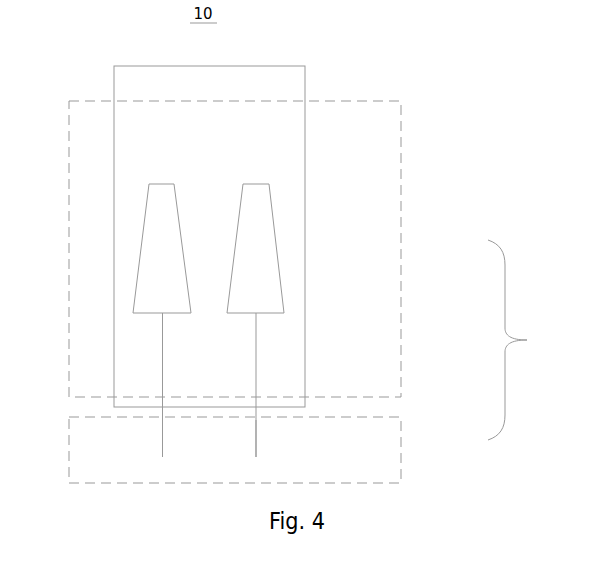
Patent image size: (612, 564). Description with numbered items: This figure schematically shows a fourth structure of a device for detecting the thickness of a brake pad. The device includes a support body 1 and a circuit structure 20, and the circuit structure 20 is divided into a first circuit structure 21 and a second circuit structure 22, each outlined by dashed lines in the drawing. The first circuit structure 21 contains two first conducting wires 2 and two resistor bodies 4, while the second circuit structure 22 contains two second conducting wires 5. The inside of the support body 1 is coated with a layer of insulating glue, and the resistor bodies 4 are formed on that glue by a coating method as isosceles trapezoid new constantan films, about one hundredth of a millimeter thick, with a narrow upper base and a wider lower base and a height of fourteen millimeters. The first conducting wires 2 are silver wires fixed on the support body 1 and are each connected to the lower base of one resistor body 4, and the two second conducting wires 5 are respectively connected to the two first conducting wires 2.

The support body 1 is at (304, 66).
The first conducting wire 2 is at (162, 357).
The resistor body 4 is at (158, 184).
The second conducting wire 5 is at (162, 437).
The circuit structure 20 is at (520, 340).
The first circuit structure 21 is at (401, 250).
The second circuit structure 22 is at (401, 445).